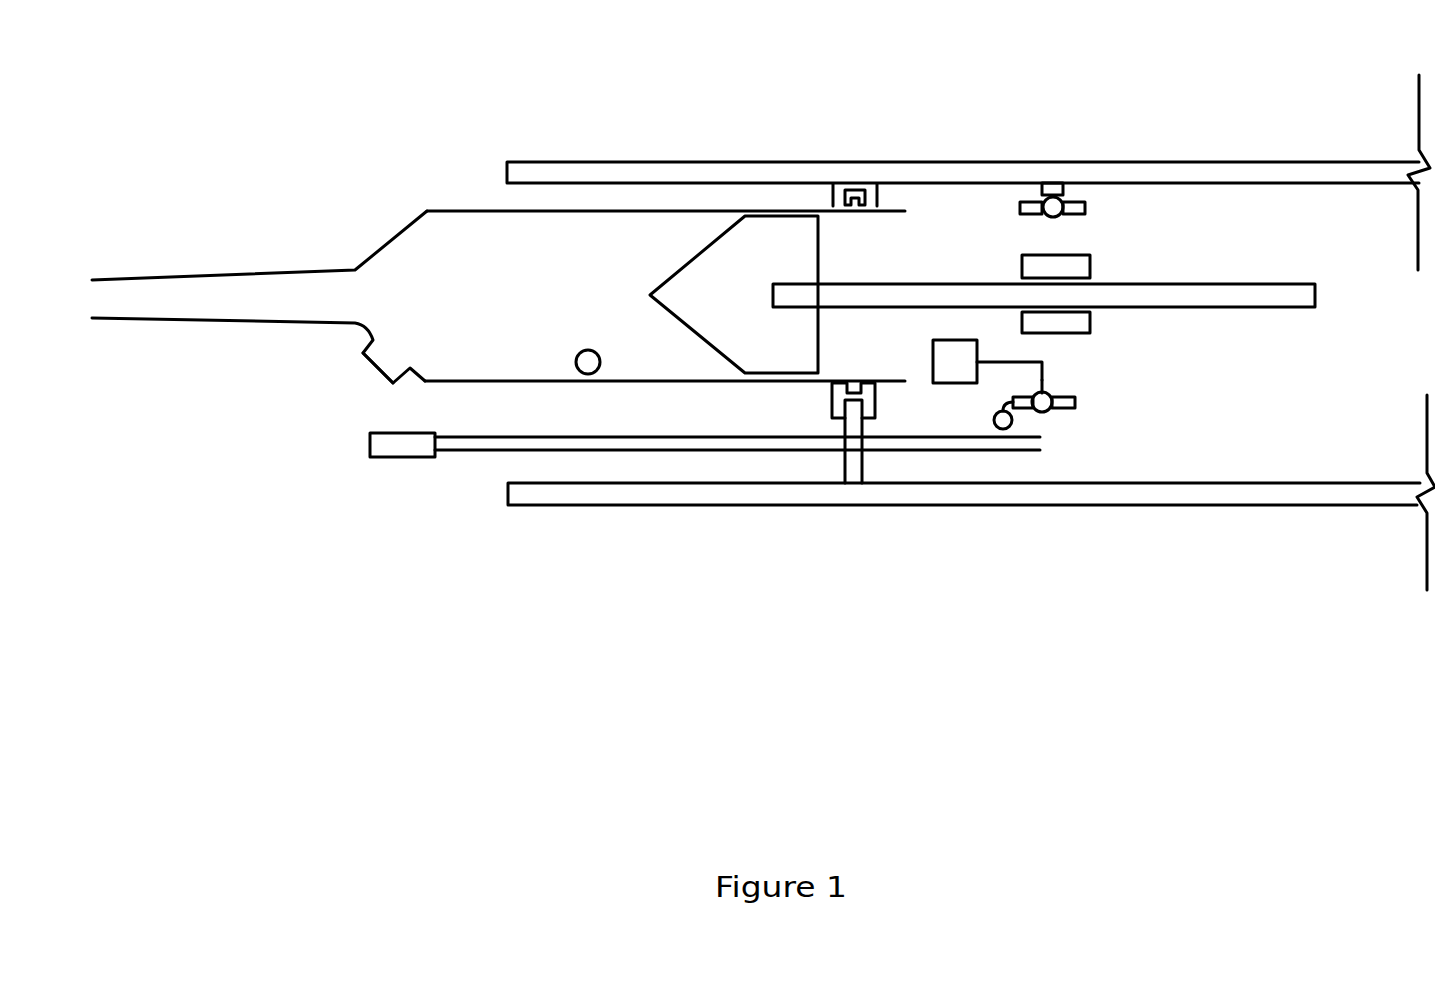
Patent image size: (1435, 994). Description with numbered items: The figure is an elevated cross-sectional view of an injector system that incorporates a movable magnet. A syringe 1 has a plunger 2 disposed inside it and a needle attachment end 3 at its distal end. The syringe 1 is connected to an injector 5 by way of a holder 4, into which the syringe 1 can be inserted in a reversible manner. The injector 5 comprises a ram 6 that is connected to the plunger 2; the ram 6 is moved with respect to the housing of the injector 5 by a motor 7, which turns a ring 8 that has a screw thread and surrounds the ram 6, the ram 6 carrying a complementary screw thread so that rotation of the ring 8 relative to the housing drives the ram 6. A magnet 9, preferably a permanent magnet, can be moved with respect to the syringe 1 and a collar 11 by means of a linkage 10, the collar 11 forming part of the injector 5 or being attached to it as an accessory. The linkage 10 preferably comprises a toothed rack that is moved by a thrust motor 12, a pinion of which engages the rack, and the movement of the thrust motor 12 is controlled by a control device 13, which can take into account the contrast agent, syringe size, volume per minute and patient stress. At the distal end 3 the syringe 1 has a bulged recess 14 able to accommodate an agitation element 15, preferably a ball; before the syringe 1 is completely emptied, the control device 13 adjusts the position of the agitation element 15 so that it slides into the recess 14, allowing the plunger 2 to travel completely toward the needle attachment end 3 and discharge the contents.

The syringe 1 is at (667, 210).
The plunger 2 is at (773, 232).
The needle attachment end 3 is at (268, 292).
The holder 4 is at (880, 183).
The injector 5 is at (1152, 232).
The ram 6 is at (932, 292).
The motor 7 is at (1078, 200).
The ring 8 is at (1095, 338).
The magnet 9 is at (397, 443).
The linkage 10 is at (603, 443).
The collar 11 is at (867, 172).
The thrust motor 12 is at (1070, 410).
The control device 13 is at (963, 370).
The bulged recess 14 is at (387, 353).
The agitation element 15 is at (582, 367).